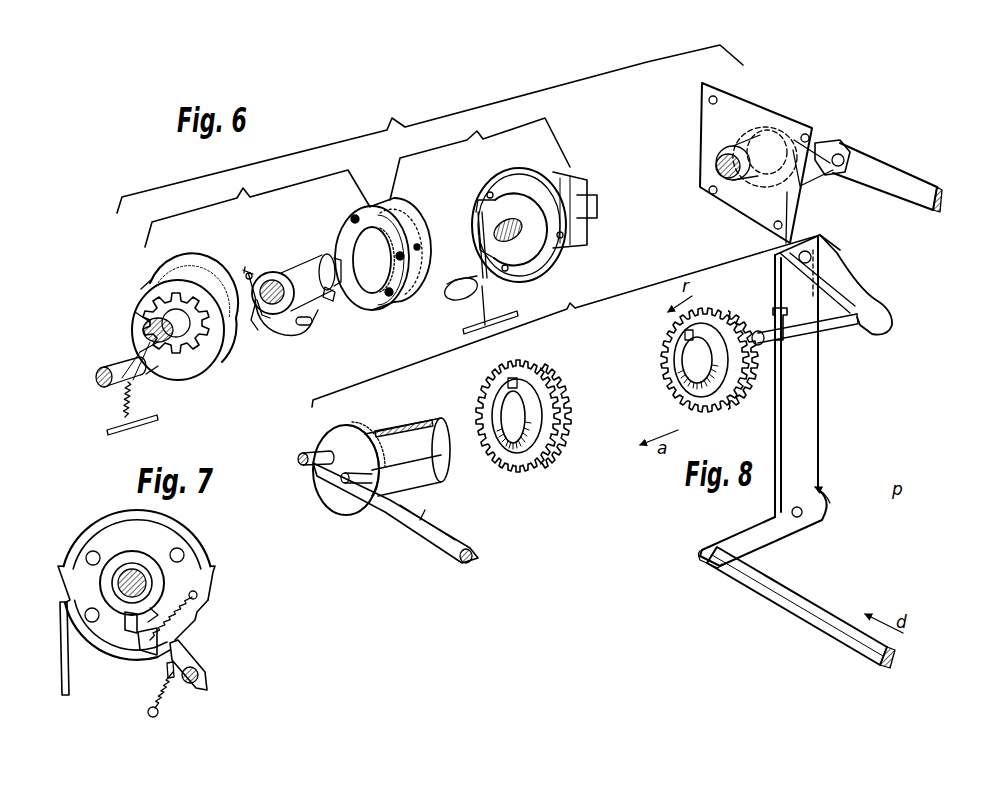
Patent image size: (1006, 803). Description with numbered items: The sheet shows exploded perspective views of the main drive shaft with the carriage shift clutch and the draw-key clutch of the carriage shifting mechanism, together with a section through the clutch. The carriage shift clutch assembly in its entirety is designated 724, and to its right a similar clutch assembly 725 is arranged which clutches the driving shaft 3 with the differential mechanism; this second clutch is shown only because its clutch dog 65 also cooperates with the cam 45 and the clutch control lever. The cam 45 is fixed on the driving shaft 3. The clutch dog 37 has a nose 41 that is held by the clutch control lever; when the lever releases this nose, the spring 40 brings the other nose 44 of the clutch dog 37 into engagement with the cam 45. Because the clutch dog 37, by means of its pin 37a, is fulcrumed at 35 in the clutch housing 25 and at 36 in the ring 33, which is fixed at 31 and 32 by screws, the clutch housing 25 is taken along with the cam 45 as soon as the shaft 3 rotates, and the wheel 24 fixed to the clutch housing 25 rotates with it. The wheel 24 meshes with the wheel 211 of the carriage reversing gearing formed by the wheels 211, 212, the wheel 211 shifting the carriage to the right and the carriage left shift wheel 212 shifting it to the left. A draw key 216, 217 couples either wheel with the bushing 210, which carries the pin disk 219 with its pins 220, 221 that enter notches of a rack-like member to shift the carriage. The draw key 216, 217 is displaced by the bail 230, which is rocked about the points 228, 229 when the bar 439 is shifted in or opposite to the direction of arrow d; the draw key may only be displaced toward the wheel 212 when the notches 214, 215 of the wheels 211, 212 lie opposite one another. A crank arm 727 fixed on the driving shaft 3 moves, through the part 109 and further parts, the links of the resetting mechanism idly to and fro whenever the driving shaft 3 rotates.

In FIG. 6, the carriage shift clutch assembly 724 is at (257, 208).
In FIG. 6, the clutch assembly 725 is at (480, 157).
In FIG. 6, the driving shaft 3 is at (273, 288).
In FIG. 7, the driving shaft 3 is at (150, 587).
In FIG. 8, the driving shaft 3 is at (730, 178).
In FIG. 6, the wheel 24 is at (178, 350).
In FIG. 6, the clutch housing 25 is at (187, 367).
In FIG. 6, the fulcrum 35 is at (218, 348).
In FIG. 6, the spring 40 is at (237, 273).
In FIG. 7, the spring 40 is at (185, 615).
In FIG. 6, the nose 41 is at (324, 297).
In FIG. 7, the nose 41 is at (62, 596).
In FIG. 6, the clutch dog 37 is at (293, 337).
In FIG. 6, the pin 37a is at (310, 323).
In FIG. 7, the pin 37a is at (92, 623).
In FIG. 6, the nose 44 is at (257, 333).
In FIG. 7, the nose 44 is at (142, 636).
In FIG. 6, the cam 45 is at (275, 318).
In FIG. 7, the cam 45 is at (128, 616).
In FIG. 6, the fixing point 31 is at (353, 215).
In FIG. 7, the fixing point 31 is at (185, 553).
In FIG. 6, the fixing point 32 is at (404, 256).
In FIG. 7, the fixing point 32 is at (85, 553).
In FIG. 6, the ring 33 is at (373, 300).
In FIG. 6, the fulcrum 36 is at (405, 293).
In FIG. 6, the clutch dog 65 is at (512, 270).
In FIG. 8, the crank arm 727 is at (827, 140).
In FIG. 8, the part 109 is at (923, 203).
In FIG. 8, the pivot point 228 is at (815, 258).
In FIG. 8, the pivot point 229 is at (805, 512).
In FIG. 8, the bail 230 is at (803, 377).
In FIG. 8, the wheel 211 is at (708, 310).
In FIG. 8, the notch 214 is at (686, 335).
In FIG. 8, the draw key 216 is at (778, 328).
In FIG. 8, the draw key 217 is at (837, 333).
In FIG. 8, the bar 439 is at (774, 587).
In FIG. 8, the carriage left shift wheel 212 is at (486, 408).
In FIG. 8, the notch 215 is at (508, 382).
In FIG. 8, the bushing 210 is at (420, 463).
In FIG. 8, the pin disk 219 is at (330, 496).
In FIG. 8, the pin 220 is at (300, 458).
In FIG. 8, the pin 221 is at (348, 483).